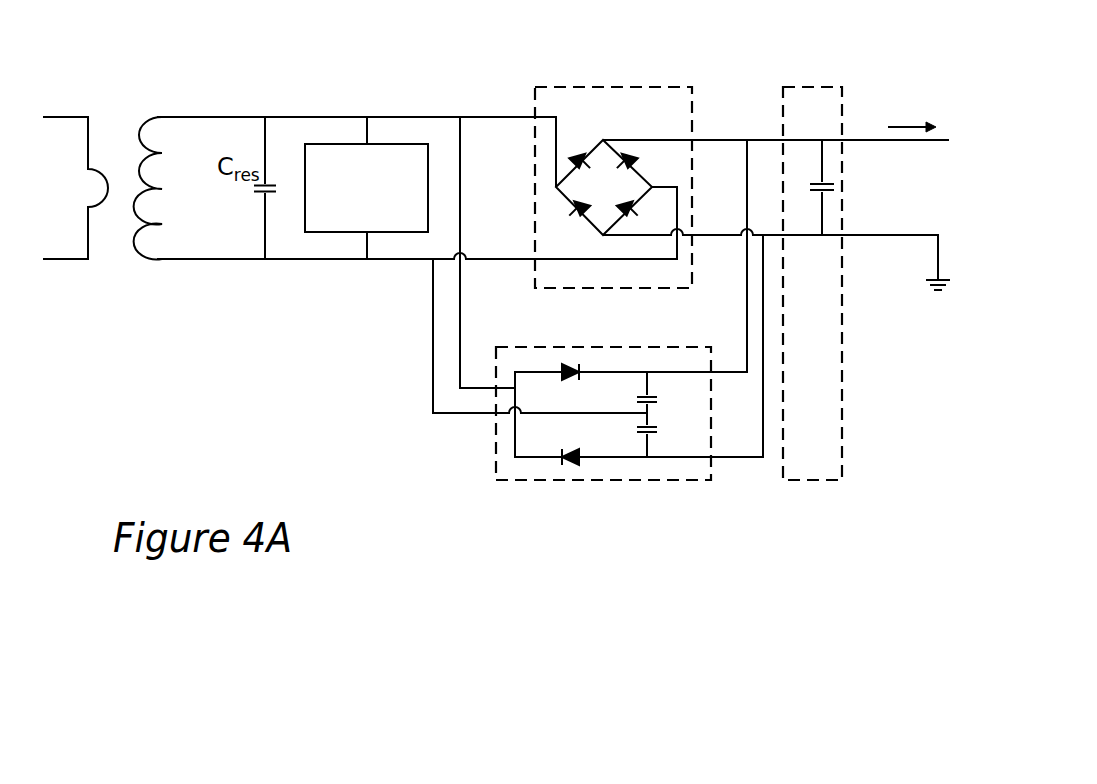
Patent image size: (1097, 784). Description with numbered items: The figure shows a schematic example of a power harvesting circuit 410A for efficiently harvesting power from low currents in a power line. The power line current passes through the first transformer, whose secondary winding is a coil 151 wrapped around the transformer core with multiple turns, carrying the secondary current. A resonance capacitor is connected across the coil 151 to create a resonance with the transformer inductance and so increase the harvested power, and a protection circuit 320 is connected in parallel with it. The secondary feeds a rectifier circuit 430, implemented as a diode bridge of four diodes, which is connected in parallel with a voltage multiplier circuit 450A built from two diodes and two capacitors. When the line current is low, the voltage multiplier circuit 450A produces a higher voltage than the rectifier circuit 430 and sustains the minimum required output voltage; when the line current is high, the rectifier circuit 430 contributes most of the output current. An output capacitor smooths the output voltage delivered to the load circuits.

The coil 151 is at (145, 254).
The protection circuit 320 is at (412, 143).
The power harvesting circuit 410A is at (784, 32).
The rectifier circuit 430 is at (691, 82).
The voltage multiplier circuit 450A is at (713, 339).